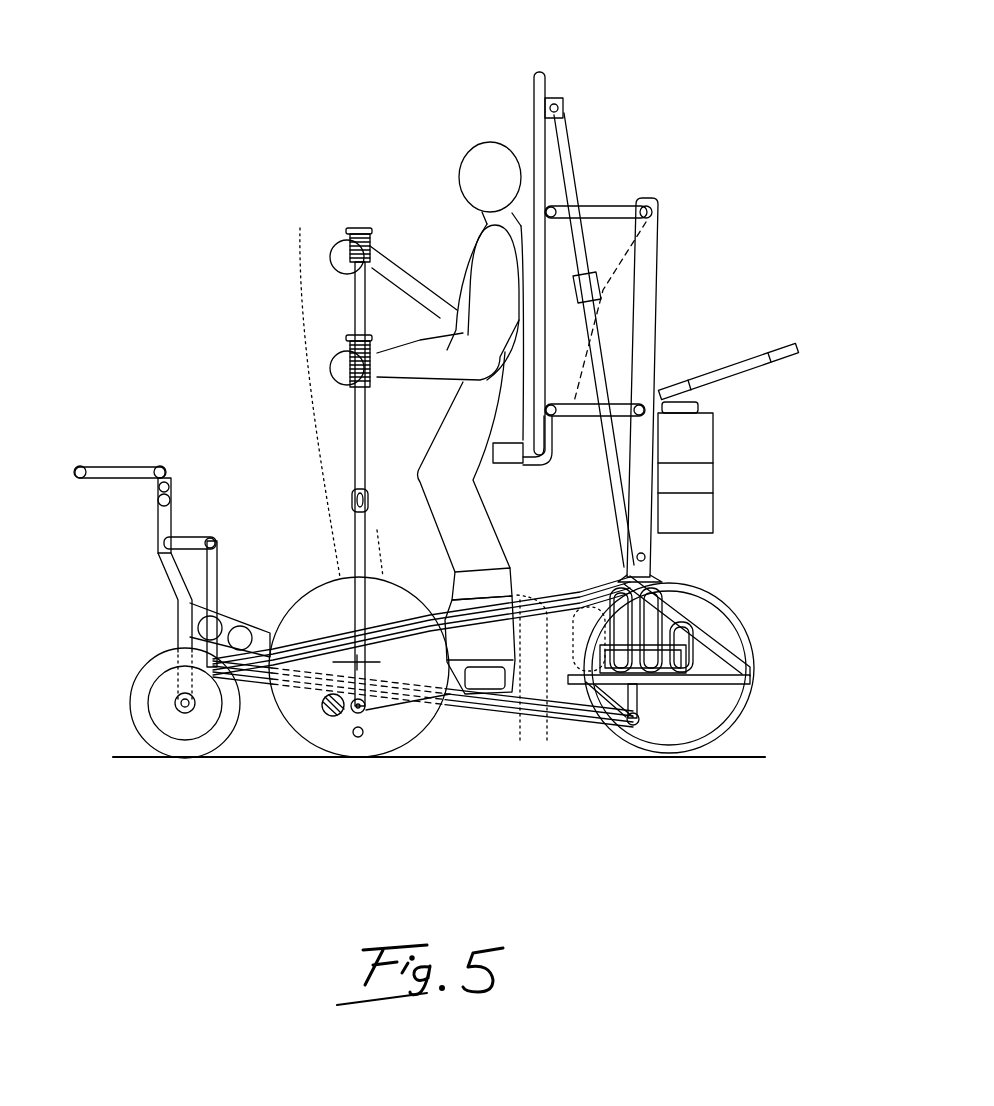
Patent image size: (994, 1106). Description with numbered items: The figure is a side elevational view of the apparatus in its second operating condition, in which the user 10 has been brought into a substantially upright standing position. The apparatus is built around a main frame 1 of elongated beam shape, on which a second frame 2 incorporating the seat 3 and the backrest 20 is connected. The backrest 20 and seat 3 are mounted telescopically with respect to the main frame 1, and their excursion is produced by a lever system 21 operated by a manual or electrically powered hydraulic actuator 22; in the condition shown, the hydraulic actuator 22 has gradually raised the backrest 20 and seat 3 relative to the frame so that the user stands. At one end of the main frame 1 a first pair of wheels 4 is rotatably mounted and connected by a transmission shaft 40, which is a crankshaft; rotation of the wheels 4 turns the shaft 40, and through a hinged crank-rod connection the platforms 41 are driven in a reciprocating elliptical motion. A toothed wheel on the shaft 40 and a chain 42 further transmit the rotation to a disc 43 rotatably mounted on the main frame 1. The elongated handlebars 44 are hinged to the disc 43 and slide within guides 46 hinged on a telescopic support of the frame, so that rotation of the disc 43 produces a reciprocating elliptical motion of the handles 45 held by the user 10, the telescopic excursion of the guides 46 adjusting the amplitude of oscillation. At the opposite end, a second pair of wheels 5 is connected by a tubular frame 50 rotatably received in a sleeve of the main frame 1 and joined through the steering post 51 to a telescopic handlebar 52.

The user 10 is at (441, 148).
The second frame 2 is at (680, 273).
The backrest 20 is at (530, 101).
The lever system 21 is at (610, 205).
The hydraulic actuator 22 is at (717, 470).
The seat 3 is at (520, 473).
The main frame 1 is at (710, 657).
The first pair of wheels 4 is at (745, 707).
The transmission shaft 40 is at (640, 722).
The platforms 41 is at (582, 688).
The chain 42 is at (455, 690).
The disc 43 is at (305, 718).
The elongated handlebars 44 is at (350, 457).
The handles 45 is at (337, 242).
The guides 46 is at (352, 500).
The second pair of wheels 5 is at (132, 687).
The tubular frame 50 is at (170, 590).
The steering post 51 is at (173, 517).
The telescopic handlebar 52 is at (117, 462).